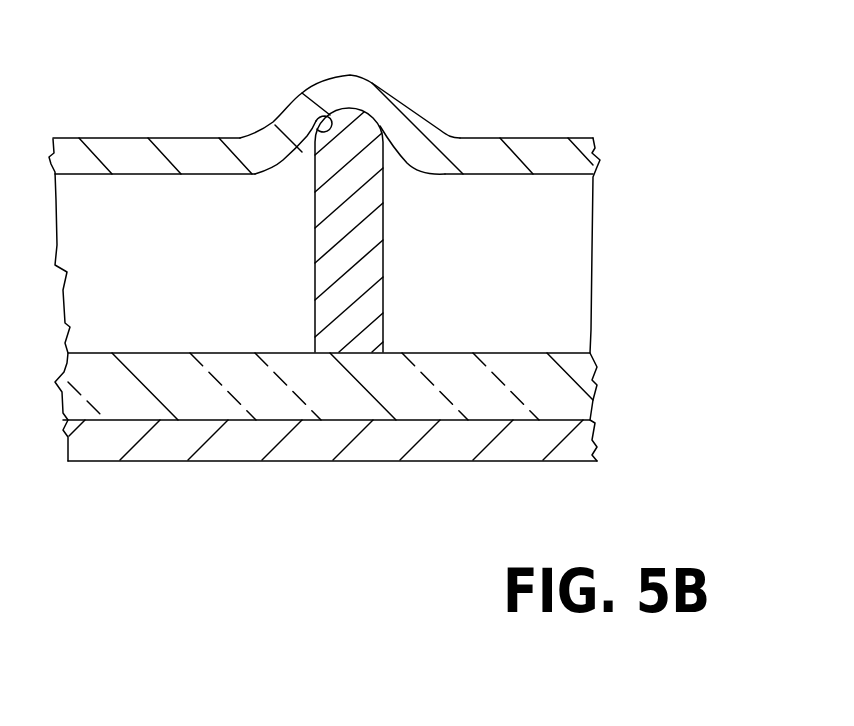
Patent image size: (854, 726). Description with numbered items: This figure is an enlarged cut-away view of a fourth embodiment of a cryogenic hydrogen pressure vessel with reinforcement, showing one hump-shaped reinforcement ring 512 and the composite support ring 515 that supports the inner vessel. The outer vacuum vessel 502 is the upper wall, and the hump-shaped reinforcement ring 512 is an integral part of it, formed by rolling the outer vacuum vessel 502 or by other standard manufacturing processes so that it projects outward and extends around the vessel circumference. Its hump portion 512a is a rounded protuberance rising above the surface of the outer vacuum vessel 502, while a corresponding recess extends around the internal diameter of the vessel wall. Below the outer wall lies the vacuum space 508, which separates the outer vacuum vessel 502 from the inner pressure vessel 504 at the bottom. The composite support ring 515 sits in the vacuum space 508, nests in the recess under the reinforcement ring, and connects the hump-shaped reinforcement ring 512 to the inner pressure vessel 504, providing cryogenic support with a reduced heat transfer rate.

The outer vacuum vessel 502 is at (327, 120).
The inner pressure vessel 504 is at (332, 482).
The vacuum space 508 is at (518, 260).
The hump-shaped reinforcement ring 512 is at (351, 98).
The hump portion 512a is at (300, 101).
The composite support ring 515 is at (295, 230).